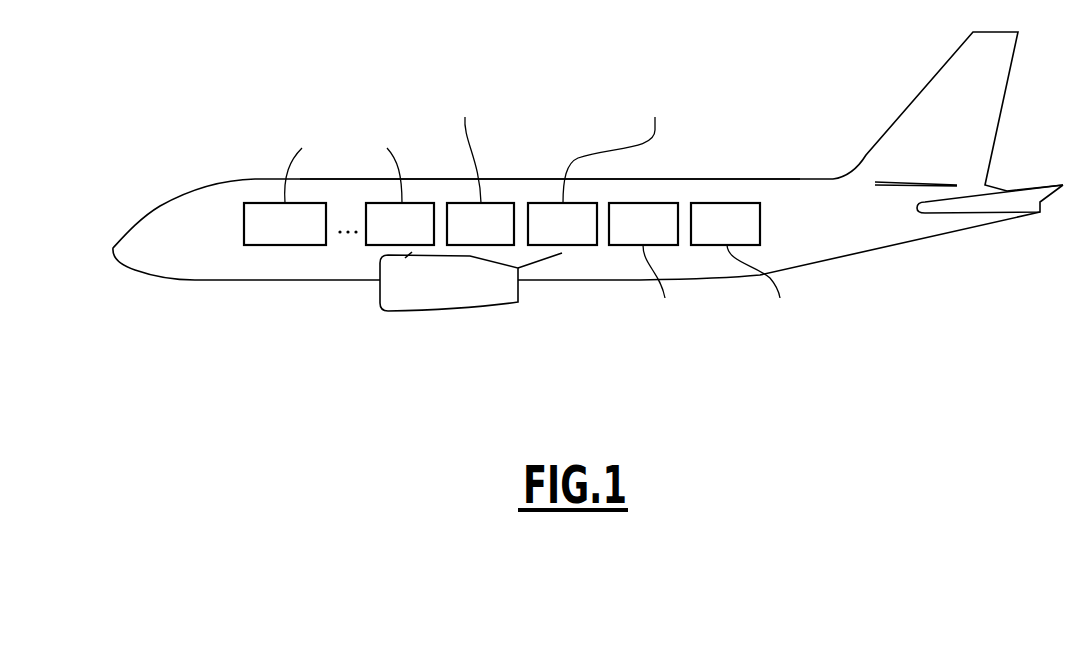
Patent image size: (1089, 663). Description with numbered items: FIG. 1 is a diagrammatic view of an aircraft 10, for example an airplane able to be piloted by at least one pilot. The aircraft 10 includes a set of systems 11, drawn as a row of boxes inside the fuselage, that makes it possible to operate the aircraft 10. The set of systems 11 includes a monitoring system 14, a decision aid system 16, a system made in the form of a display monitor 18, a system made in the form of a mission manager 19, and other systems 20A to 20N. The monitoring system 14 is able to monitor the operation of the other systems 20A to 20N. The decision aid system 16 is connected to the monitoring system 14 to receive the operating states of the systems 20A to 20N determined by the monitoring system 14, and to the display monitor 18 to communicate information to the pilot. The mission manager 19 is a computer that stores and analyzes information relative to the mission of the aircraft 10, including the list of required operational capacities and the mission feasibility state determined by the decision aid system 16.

The aircraft 10 is at (245, 122).
The set of systems 11 is at (523, 191).
The other system 20A is at (314, 182).
The other system 20N is at (400, 196).
The monitoring system 14 is at (462, 141).
The decision aid system 16 is at (615, 141).
The display monitor 18 is at (659, 284).
The mission manager 19 is at (763, 283).